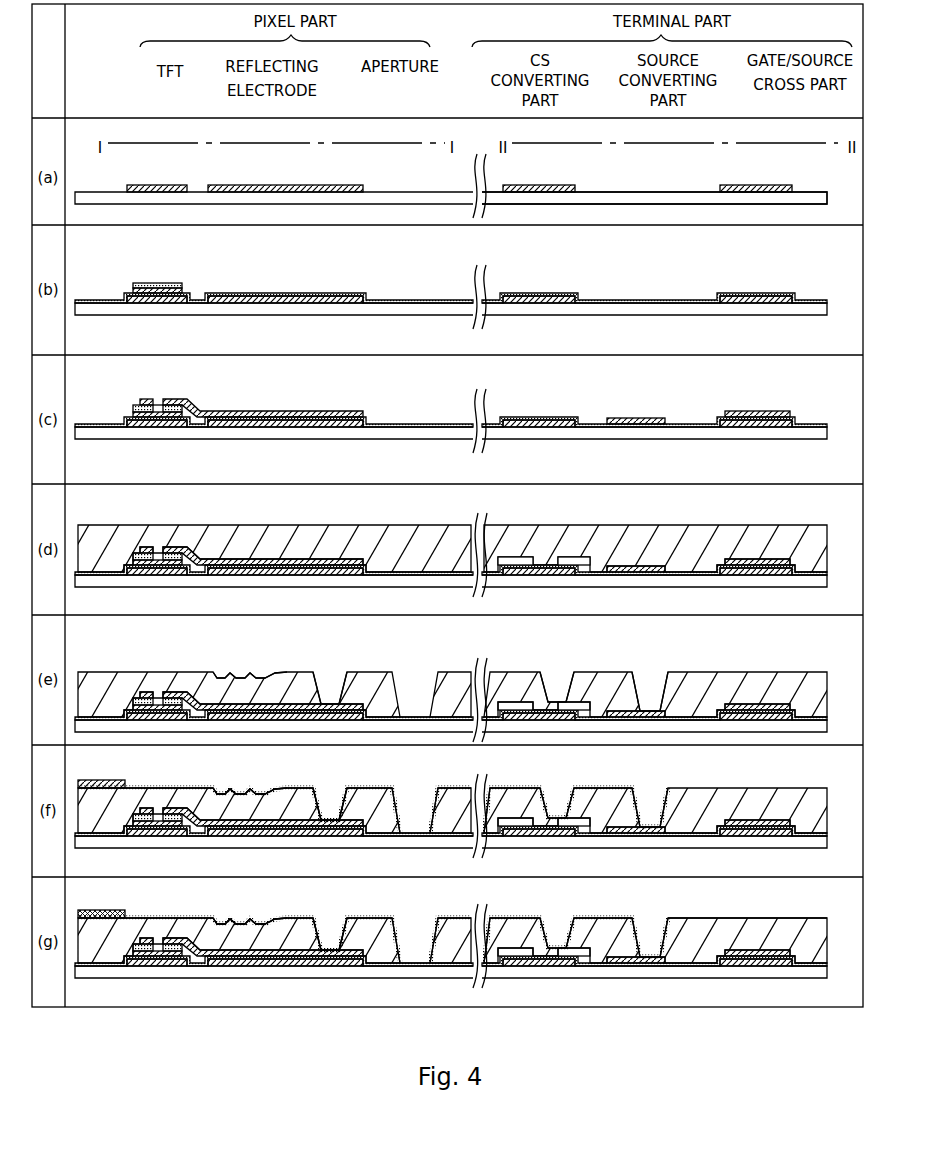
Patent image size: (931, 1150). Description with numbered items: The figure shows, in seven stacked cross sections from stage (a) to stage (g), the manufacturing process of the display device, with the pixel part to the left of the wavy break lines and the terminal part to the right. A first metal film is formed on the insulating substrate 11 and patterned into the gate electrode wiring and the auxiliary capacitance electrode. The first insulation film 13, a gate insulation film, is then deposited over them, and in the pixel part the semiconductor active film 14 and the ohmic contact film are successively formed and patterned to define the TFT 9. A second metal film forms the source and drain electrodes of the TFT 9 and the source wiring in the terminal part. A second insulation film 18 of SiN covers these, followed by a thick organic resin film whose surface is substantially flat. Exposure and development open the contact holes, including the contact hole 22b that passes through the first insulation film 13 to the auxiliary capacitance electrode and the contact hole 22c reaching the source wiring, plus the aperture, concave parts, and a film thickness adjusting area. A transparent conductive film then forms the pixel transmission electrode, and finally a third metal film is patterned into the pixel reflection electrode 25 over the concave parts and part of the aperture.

The TFT 9 is at (161, 383).
The insulating substrate 11 is at (657, 179).
The first insulation film 13 is at (451, 281).
The semiconductor active film 14 is at (138, 284).
The second insulation film 18 is at (545, 532).
The contact hole 22b is at (545, 668).
The contact hole 22c is at (641, 672).
The pixel reflection electrode 25 is at (242, 900).